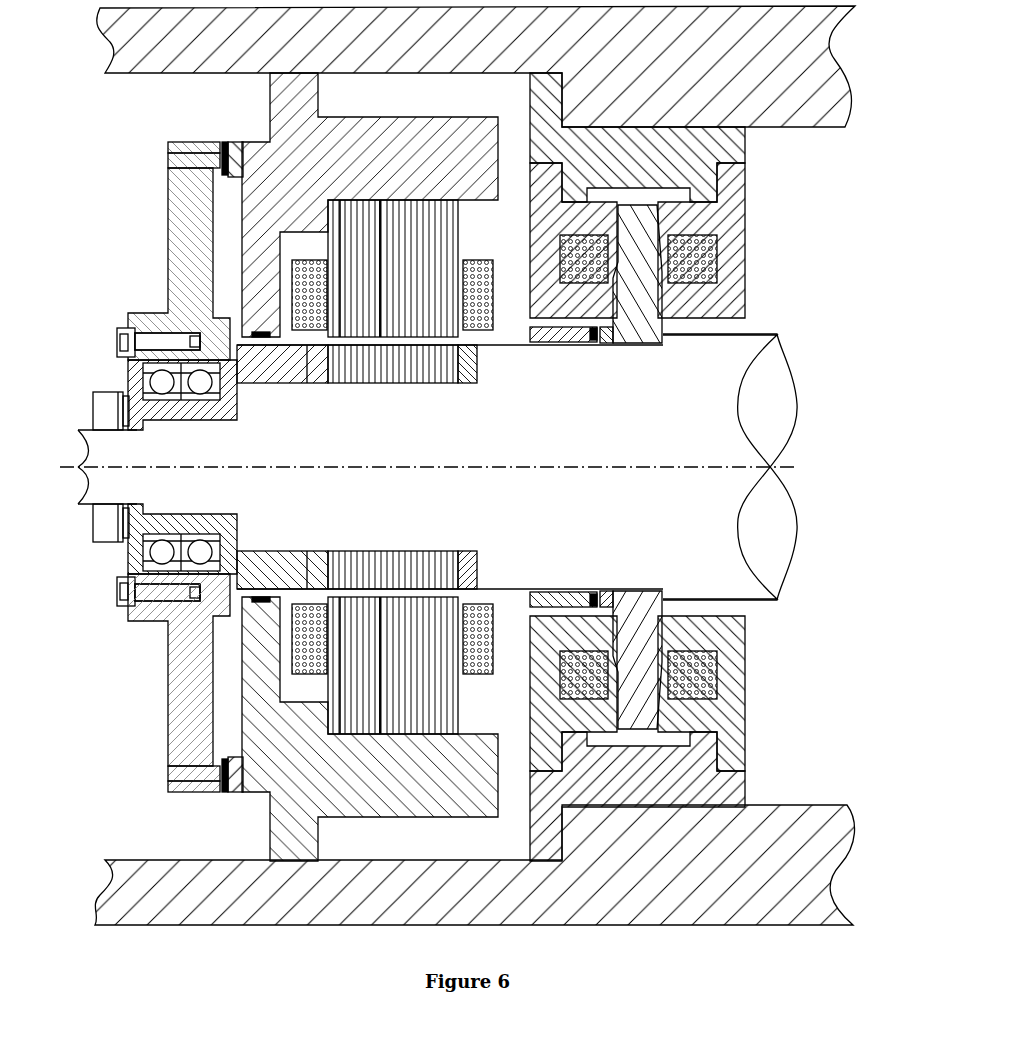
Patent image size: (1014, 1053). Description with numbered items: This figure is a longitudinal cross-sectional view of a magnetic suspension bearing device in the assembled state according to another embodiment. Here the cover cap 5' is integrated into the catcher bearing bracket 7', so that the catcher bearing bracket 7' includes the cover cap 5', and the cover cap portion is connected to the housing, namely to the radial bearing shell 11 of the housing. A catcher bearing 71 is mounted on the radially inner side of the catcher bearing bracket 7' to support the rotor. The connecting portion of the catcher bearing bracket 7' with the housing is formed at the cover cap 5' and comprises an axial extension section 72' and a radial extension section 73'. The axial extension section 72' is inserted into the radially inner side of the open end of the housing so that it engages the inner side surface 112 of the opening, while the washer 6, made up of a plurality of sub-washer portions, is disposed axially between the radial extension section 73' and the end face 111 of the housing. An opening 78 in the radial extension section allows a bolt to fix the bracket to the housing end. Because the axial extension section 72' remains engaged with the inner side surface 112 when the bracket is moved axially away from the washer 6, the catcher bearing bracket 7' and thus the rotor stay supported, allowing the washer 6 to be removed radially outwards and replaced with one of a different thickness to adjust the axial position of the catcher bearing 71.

The radial extension section 73' is at (175, 133).
The washer 6 is at (230, 178).
The radial bearing shell 11 is at (300, 168).
The axial extension section 72' is at (162, 136).
The opening 78 is at (177, 163).
The catcher bearing bracket 7' is at (171, 264).
The catcher bearing 71 is at (146, 324).
The cover cap 5' is at (135, 670).
The inner side surface 112 is at (233, 756).
The end face 111 is at (222, 782).